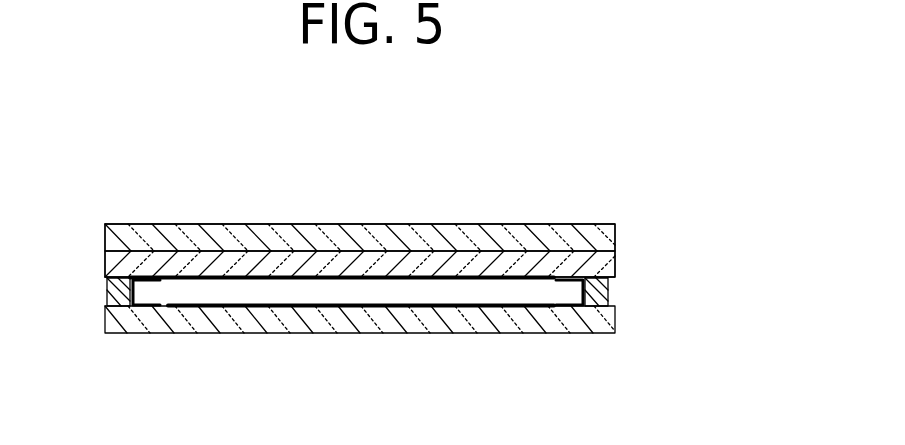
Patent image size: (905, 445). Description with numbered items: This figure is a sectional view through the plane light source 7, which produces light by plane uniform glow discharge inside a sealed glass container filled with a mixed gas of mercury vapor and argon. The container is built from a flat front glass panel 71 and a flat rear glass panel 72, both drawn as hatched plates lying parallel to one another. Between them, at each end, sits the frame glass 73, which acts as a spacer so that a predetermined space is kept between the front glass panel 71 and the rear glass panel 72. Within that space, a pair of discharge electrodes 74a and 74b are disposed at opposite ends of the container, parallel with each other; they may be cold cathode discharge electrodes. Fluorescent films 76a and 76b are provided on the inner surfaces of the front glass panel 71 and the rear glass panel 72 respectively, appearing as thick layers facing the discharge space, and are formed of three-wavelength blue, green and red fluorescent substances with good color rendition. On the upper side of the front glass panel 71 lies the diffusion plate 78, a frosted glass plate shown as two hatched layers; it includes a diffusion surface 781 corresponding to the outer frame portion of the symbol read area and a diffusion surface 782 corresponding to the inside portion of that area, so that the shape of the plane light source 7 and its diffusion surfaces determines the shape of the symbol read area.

The plane light source 7 is at (381, 255).
The front glass panel 71 is at (240, 258).
The rear glass panel 72 is at (120, 313).
The frame glass 73 is at (118, 292).
The discharge electrode 74a is at (553, 278).
The discharge electrode 74b is at (152, 306).
The fluorescent film 76a is at (484, 280).
The fluorescent film 76b is at (350, 310).
The diffusion plate 78 is at (360, 195).
The diffusion surface 781 is at (122, 224).
The diffusion surface 782 is at (422, 224).